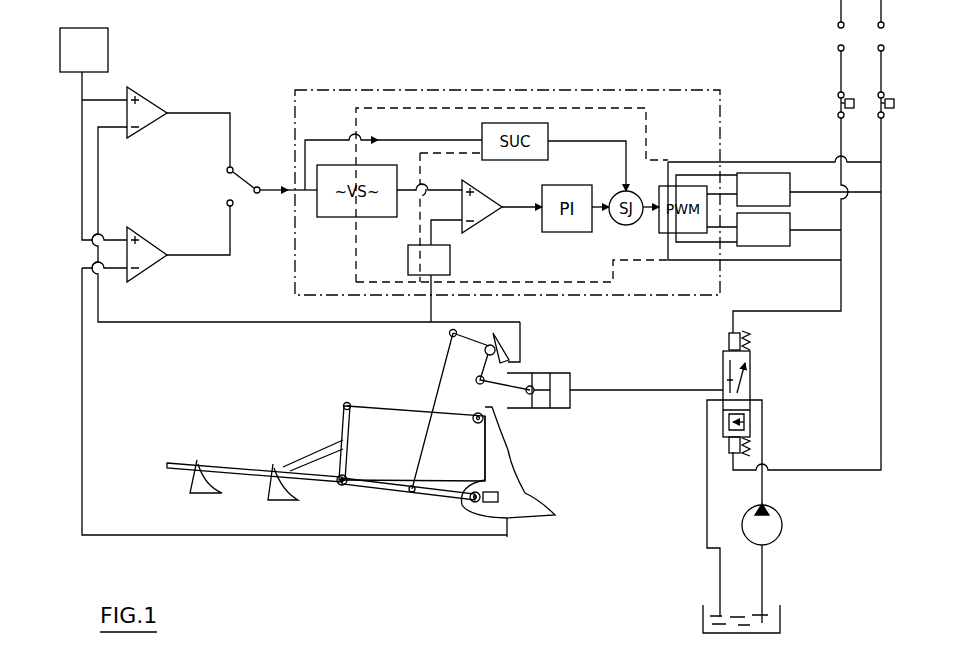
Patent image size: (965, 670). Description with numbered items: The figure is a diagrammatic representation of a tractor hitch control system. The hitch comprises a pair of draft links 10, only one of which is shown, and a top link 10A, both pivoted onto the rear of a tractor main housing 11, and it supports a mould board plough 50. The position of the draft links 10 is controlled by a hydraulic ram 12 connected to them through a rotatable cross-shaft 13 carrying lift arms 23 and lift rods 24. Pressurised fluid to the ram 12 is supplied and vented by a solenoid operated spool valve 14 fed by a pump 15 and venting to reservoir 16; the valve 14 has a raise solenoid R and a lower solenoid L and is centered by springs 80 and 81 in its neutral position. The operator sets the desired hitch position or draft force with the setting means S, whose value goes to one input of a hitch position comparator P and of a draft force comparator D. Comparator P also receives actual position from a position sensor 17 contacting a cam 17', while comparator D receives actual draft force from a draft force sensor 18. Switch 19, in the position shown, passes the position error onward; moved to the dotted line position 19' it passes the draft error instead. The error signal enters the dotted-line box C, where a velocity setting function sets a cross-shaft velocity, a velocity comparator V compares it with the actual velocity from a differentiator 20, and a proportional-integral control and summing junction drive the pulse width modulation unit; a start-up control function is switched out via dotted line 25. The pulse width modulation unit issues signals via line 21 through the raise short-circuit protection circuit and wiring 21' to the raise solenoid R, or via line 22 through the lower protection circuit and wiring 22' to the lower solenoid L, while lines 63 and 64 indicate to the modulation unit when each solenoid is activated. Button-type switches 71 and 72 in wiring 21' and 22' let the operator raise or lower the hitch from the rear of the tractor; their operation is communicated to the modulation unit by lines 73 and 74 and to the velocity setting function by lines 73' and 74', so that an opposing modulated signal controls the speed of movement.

The setting means S is at (110, 56).
The hitch position comparator P is at (153, 106).
The draft force comparator D is at (145, 266).
The switch 19 is at (245, 156).
The dotted line position of switch 19' is at (250, 224).
The dotted-line box C is at (377, 88).
The dotted line 73' is at (512, 164).
The line 74' is at (491, 217).
The dotted line 25 is at (418, 154).
The velocity comparator V is at (485, 215).
The differentiator 20 is at (408, 264).
The line 63 is at (693, 162).
The line 64 is at (702, 243).
The line 21 is at (763, 162).
The line 22 is at (763, 257).
The line 73 is at (803, 136).
The line 74 is at (813, 280).
The wiring 21' is at (870, 195).
The wiring 22' is at (860, 247).
The button-type switch 71 is at (896, 104).
The button-type switch 72 is at (838, 104).
The solenoid operated spool valve 14 is at (723, 380).
The spring 80 is at (752, 336).
The spring 81 is at (752, 446).
The lower solenoid L is at (729, 338).
The raise solenoid R is at (729, 441).
The pump 15 is at (772, 528).
The reservoir 16 is at (712, 605).
The hydraulic ram 12 is at (562, 408).
The rotatable cross-shaft 13 is at (494, 331).
The position sensor 17 is at (526, 370).
The cam 17' is at (549, 333).
The lift arm 23 is at (452, 340).
The top link 10A is at (379, 408).
The lift rod 24 is at (413, 443).
The draft link 10 is at (376, 489).
The tractor main housing 11 is at (490, 462).
The draft force sensor 18 is at (505, 482).
The mould board plough 50 is at (245, 465).